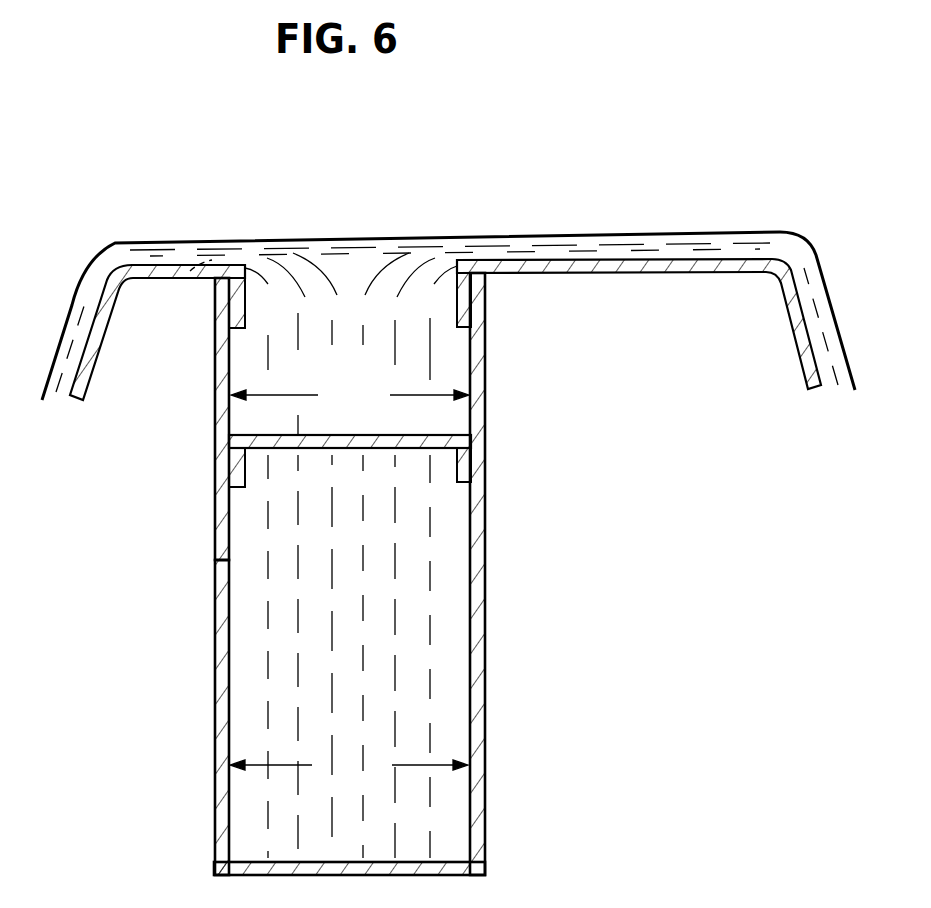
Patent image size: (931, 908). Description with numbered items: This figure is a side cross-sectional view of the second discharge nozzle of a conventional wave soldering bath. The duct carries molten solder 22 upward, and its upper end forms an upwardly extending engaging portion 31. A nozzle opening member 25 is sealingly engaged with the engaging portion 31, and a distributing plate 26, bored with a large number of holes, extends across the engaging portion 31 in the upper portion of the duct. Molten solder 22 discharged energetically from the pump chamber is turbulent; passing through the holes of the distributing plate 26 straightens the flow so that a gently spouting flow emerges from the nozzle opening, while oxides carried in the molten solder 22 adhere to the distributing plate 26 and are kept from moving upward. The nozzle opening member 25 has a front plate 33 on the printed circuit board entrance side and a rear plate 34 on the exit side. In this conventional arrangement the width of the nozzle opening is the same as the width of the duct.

The molten solder 22 is at (378, 655).
The nozzle opening member 25 is at (216, 415).
The distributing plate 26 is at (382, 449).
The engaging portion 31 is at (214, 797).
The front plate 33 is at (157, 279).
The rear plate 34 is at (714, 275).